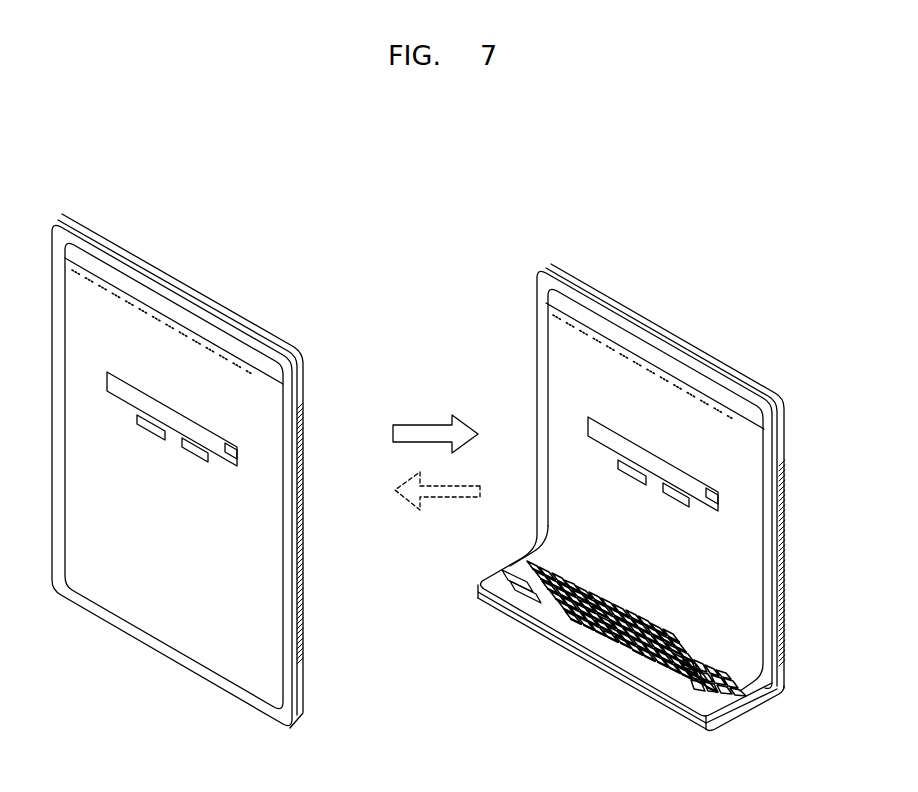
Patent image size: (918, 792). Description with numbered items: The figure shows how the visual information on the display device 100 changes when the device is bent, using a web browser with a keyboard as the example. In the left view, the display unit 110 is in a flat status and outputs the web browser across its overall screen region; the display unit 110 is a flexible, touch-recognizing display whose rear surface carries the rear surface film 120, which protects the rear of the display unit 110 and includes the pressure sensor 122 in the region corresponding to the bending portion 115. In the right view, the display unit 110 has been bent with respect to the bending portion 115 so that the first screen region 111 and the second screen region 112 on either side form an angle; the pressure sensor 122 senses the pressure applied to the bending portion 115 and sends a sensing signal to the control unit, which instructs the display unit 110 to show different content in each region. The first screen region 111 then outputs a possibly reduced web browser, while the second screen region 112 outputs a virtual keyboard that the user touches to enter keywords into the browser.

The display device 100 is at (460, 470).
The display unit 110 is at (174, 628).
The first screen region 111 is at (613, 562).
The second screen region 112 is at (618, 648).
The bending portion 115 is at (770, 674).
The rear surface film 120 is at (301, 384).
The pressure sensor 122 is at (303, 458).